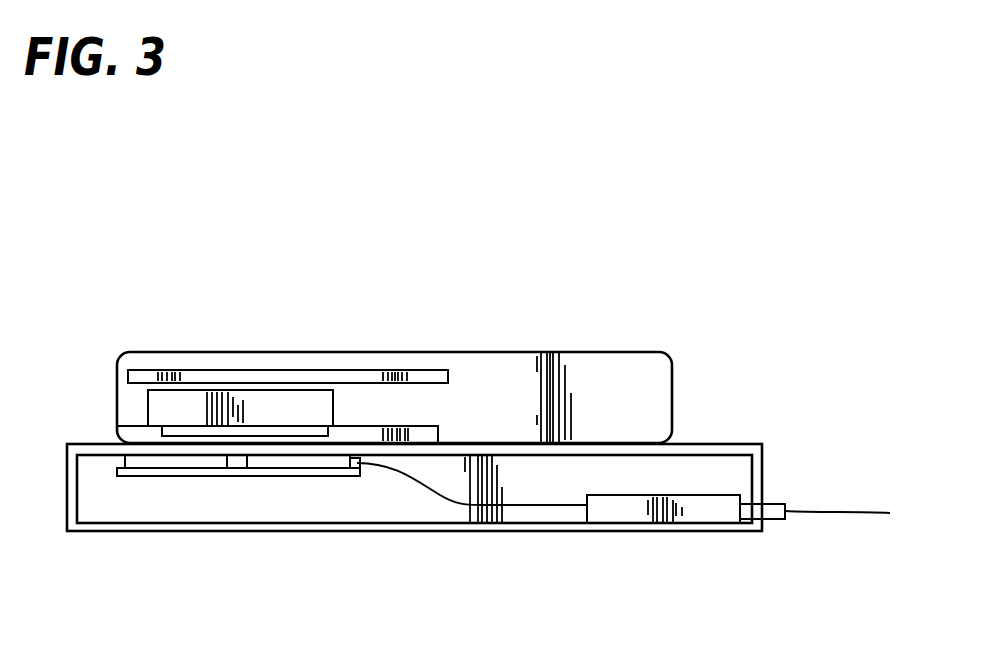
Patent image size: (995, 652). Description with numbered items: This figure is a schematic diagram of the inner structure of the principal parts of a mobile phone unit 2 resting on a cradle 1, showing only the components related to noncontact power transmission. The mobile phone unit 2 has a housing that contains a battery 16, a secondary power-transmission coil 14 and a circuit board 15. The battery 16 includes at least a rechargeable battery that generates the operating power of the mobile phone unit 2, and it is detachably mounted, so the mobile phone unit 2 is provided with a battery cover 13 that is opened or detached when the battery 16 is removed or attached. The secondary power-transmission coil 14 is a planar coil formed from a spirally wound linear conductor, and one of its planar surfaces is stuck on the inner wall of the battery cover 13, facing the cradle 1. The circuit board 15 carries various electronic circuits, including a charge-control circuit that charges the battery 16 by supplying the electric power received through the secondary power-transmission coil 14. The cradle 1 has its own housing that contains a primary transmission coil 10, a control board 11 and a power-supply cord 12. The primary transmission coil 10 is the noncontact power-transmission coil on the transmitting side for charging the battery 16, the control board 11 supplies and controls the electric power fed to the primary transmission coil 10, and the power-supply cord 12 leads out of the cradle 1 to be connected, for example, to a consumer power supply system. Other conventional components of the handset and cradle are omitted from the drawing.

The cradle 1 is at (360, 531).
The mobile phone unit 2 is at (652, 398).
The primary transmission coil 10 is at (188, 488).
The control board 11 is at (620, 512).
The power-supply cord 12 is at (813, 514).
The battery cover 13 is at (135, 435).
The secondary power-transmission coil 14 is at (170, 435).
The circuit board 15 is at (280, 368).
The battery 16 is at (322, 405).